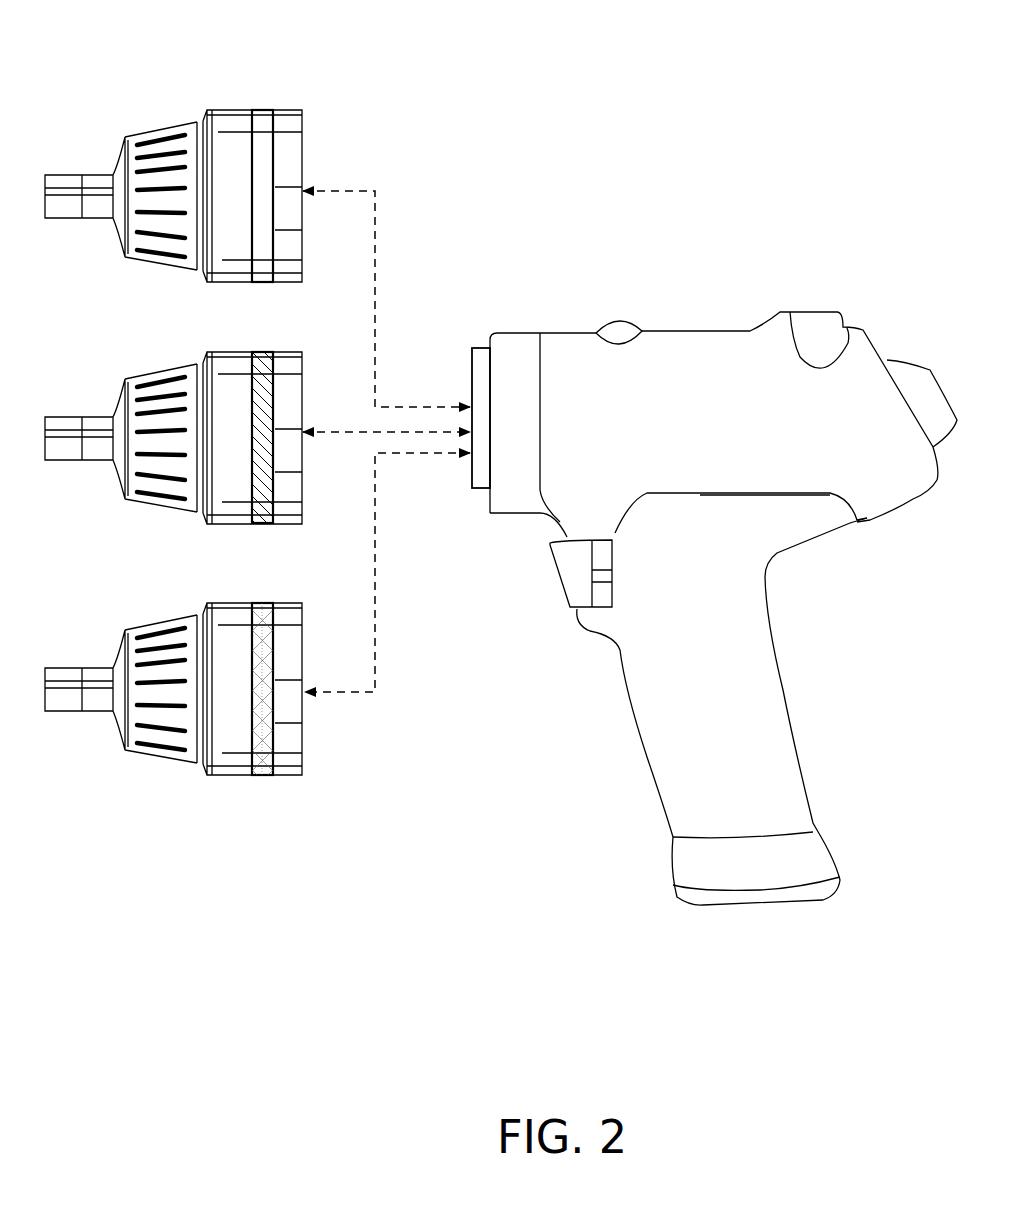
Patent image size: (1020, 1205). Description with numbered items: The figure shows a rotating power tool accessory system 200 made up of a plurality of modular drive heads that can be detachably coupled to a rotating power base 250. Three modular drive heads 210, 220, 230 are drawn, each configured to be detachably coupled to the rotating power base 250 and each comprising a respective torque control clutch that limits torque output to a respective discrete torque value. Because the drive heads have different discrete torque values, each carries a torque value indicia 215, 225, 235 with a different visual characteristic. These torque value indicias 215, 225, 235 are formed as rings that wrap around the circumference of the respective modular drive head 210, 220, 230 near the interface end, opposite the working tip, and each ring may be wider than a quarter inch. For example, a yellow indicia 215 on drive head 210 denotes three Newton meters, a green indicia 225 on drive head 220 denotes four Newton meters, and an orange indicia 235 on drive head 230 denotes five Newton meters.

The rotating power tool accessory system 200 is at (340, 38).
The modular drive head 210 is at (212, 110).
The torque value indicia 215 is at (253, 110).
The modular drive head 220 is at (225, 352).
The torque value indicia 225 is at (258, 352).
The modular drive head 230 is at (225, 603).
The torque value indicia 235 is at (258, 603).
The rotating power base 250 is at (704, 264).